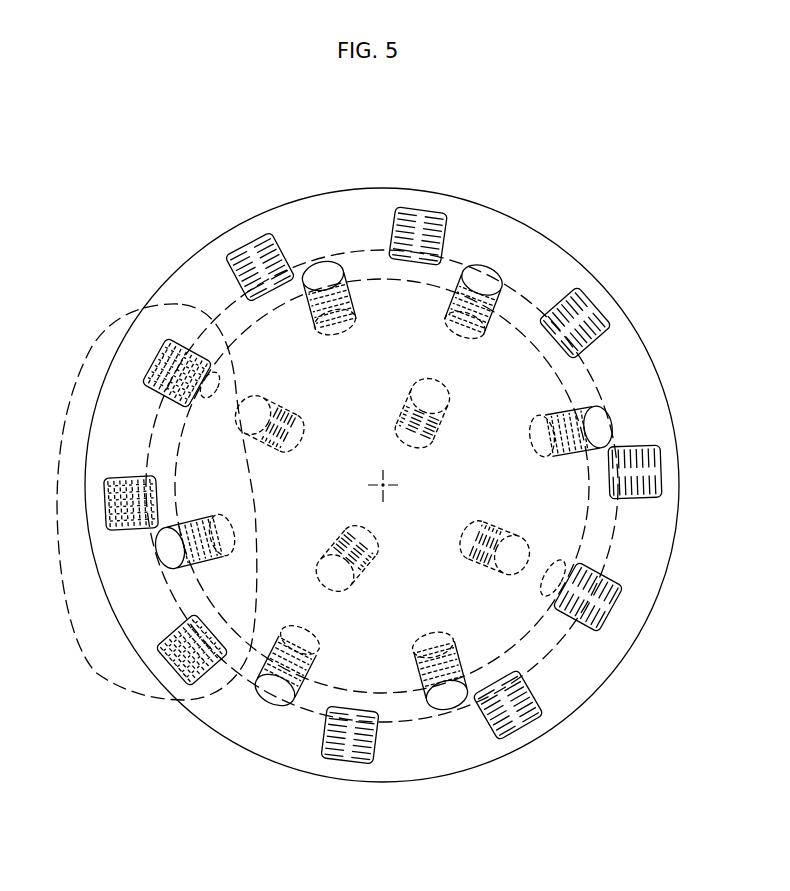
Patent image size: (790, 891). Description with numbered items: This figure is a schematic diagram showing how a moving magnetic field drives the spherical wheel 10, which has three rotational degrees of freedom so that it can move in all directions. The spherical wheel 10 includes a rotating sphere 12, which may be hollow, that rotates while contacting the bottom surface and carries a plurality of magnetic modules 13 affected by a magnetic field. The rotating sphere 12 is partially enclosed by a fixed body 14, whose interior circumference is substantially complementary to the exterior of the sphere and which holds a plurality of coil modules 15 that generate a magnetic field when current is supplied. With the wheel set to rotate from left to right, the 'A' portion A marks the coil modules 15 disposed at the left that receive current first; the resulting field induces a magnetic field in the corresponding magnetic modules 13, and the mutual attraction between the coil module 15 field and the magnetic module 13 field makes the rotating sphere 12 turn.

The spherical wheel 10 is at (403, 142).
The rotating sphere 12 is at (394, 666).
The magnetic module 13 is at (316, 655).
The fixed body 14 is at (218, 697).
The coil module 15 is at (275, 695).
The 'A' portion A is at (122, 678).